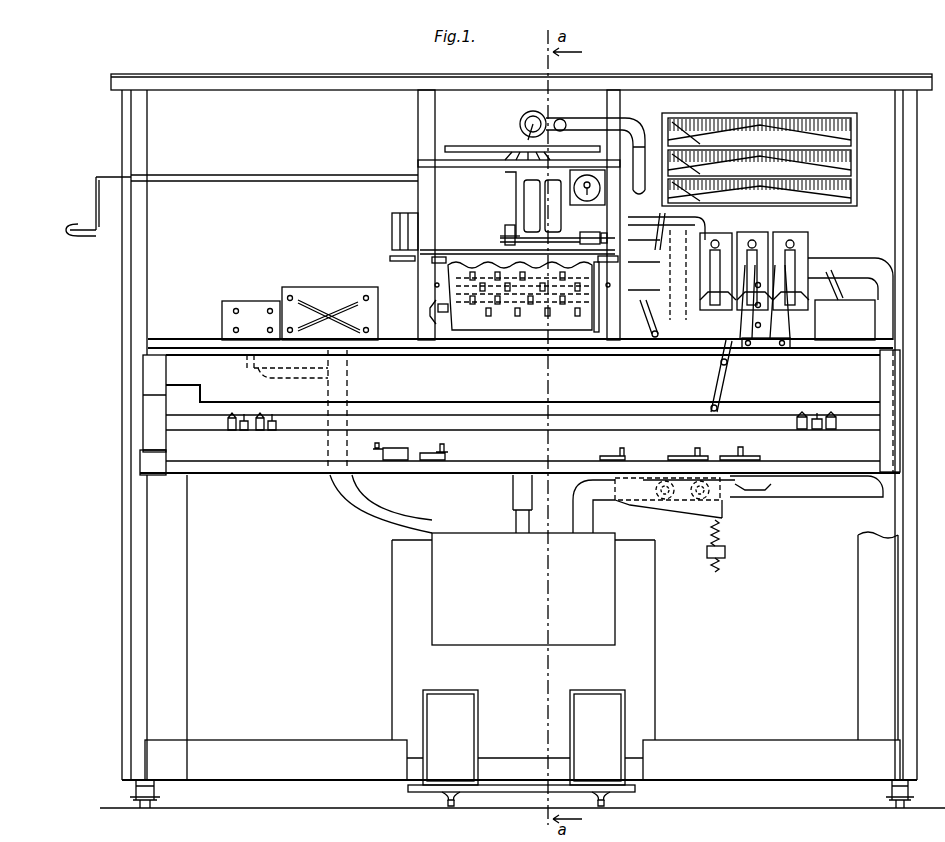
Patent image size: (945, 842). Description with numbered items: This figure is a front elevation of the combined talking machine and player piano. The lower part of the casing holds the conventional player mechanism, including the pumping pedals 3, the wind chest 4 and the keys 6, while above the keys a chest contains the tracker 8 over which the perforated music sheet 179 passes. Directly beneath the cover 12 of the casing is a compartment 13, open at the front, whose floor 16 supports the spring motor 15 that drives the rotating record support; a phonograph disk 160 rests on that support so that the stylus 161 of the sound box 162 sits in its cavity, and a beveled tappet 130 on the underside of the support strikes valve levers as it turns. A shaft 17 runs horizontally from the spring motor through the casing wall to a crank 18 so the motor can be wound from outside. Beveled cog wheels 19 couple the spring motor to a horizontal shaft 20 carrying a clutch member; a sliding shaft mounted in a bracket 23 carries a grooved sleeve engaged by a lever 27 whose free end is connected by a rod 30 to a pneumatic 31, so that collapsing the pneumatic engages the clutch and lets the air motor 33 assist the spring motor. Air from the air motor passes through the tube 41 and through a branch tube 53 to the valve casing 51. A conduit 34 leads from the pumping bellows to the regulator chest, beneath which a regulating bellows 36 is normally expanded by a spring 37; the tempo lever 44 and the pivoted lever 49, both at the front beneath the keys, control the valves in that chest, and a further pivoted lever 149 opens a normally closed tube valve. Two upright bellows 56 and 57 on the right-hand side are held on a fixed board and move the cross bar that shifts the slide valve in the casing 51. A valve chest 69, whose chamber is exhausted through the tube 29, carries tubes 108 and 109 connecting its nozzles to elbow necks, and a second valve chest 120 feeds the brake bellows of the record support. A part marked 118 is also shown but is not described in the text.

The cover 12 is at (340, 76).
The compartment 13 is at (418, 112).
The shaft 17 is at (262, 177).
The crank 18 is at (94, 178).
The phonograph disk 160 is at (450, 146).
The sound box 162 is at (527, 119).
The pin or stylus 161 is at (525, 141).
The beveled block or tappet 130 is at (560, 142).
The floor 16 is at (458, 167).
The spring motor 15 is at (530, 200).
The beveled cog wheels 19 is at (508, 230).
The horizontal shaft 20 is at (562, 240).
The bracket 23 is at (645, 216).
The lever 27 is at (690, 221).
The air motor 33 is at (800, 244).
The tube 41 is at (855, 265).
The branch tube 53 is at (841, 294).
The valve casing 51 is at (845, 320).
The pneumatic 31 is at (392, 218).
The rod 30 is at (490, 250).
The tracker 8 is at (445, 281).
The perforated music sheet 179 is at (475, 315).
The valve chest 120 is at (237, 300).
The valve chest 69 is at (320, 287).
The tube 109 is at (329, 312).
The tube 108 is at (330, 328).
The dashed connection 118 is at (287, 378).
The bellows 56 is at (740, 347).
The bellows 57 is at (775, 342).
The keys 6 is at (256, 430).
The pivoted lever 149 is at (606, 455).
The tempo lever 44 is at (696, 456).
The pivoted lever 49 is at (762, 455).
The conduit 34 is at (587, 484).
The regulating bellows 36 is at (680, 512).
The spring 37 is at (722, 540).
The tube 29 is at (375, 510).
The wind chest 4 is at (640, 643).
The pumping pedals 3 is at (521, 748).